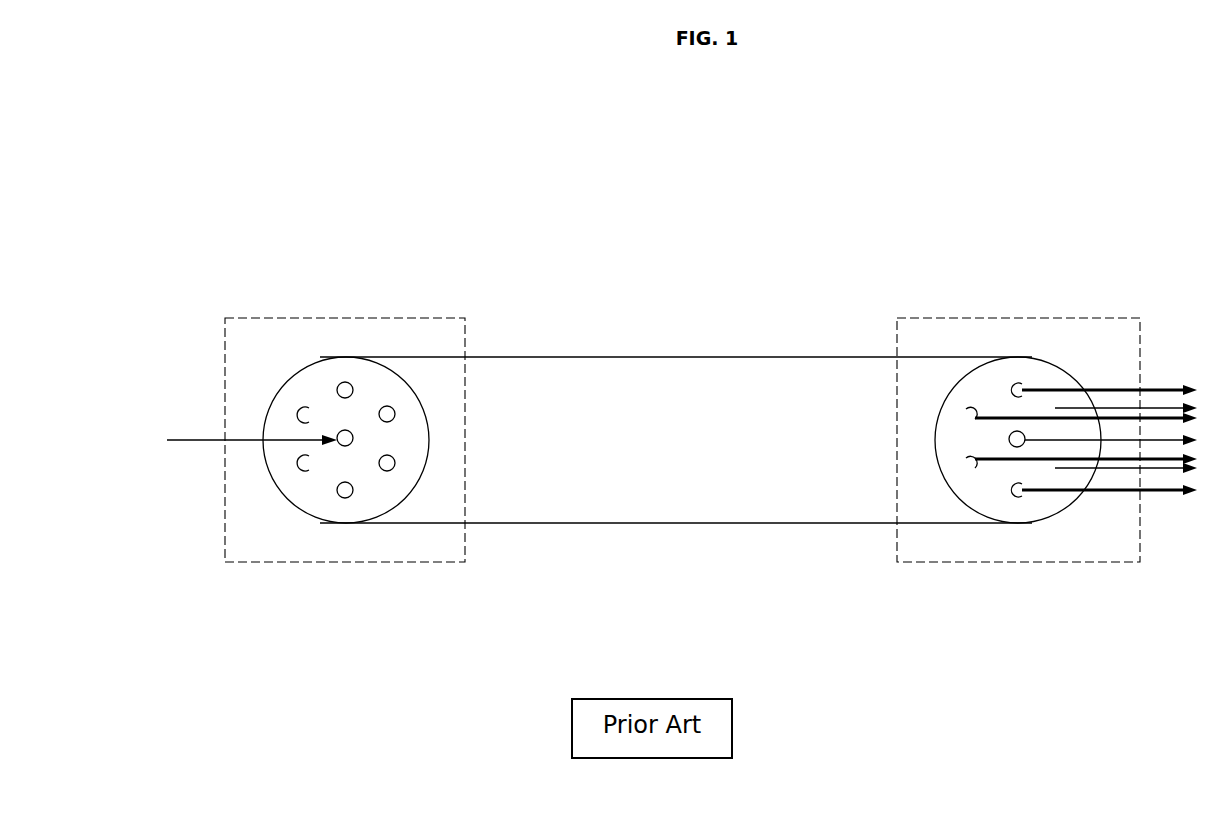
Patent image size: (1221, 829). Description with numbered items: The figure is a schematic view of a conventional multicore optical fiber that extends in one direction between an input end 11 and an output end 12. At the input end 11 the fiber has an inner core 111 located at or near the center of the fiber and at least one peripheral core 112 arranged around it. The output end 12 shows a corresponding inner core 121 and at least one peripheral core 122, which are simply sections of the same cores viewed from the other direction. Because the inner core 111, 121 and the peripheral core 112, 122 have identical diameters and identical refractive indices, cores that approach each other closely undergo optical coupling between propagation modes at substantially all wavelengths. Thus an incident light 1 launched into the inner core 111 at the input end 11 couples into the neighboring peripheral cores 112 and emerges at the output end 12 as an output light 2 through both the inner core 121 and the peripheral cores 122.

The incident light 1 is at (197, 440).
The input end 11 is at (420, 318).
The inner core 111 is at (343, 437).
The peripheral core 112 is at (395, 413).
The output end 12 is at (1092, 318).
The inner core 121 is at (1012, 437).
The peripheral core 122 is at (1017, 393).
The output light 2 is at (1120, 470).